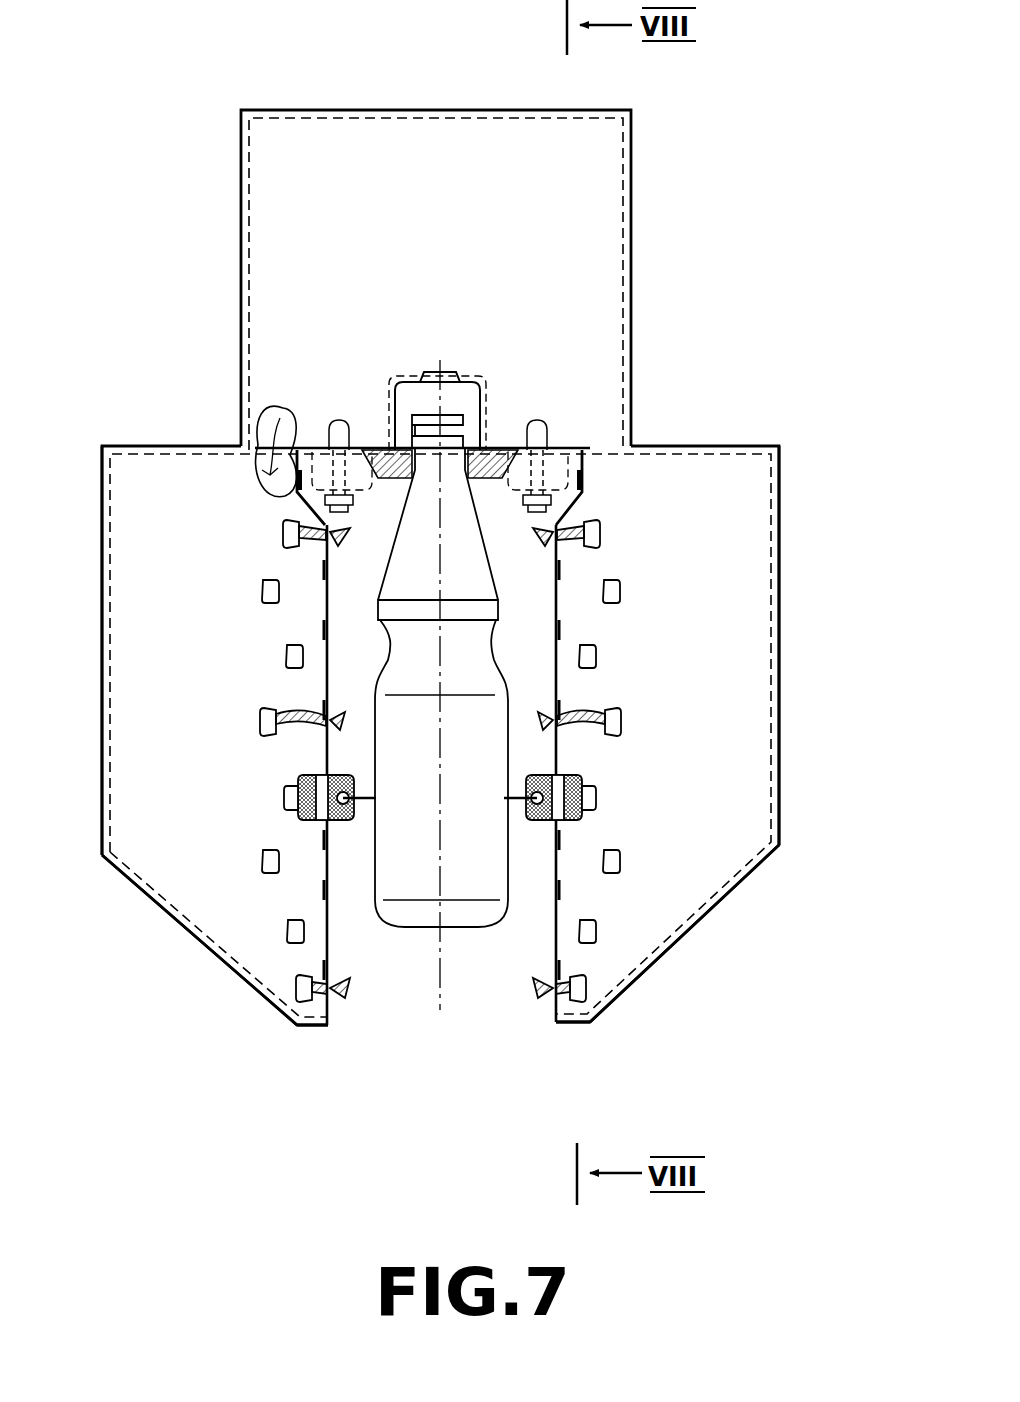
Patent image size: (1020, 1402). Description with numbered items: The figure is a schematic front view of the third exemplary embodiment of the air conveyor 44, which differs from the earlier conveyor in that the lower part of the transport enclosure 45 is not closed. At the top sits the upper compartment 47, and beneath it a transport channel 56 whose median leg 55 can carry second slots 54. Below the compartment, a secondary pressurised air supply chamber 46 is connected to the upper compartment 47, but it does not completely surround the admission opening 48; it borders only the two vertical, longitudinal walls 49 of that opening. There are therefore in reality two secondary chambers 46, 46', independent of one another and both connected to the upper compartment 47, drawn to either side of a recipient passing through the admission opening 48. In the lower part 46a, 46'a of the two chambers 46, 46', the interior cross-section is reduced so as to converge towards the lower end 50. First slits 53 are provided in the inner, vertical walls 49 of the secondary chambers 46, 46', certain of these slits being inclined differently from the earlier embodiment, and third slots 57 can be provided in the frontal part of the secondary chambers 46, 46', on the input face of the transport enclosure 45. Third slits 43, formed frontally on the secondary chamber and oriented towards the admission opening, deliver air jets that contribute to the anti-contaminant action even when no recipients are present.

The third slits 43 is at (621, 859).
The air conveyor 44 is at (680, 256).
The transport enclosure 45 is at (346, 108).
The secondary pressurised air supply chamber 46 is at (801, 645).
The secondary pressurised air supply chamber 46' is at (80, 650).
The lower part 46a is at (666, 922).
The lower part 46'a is at (199, 940).
The upper compartment 47 is at (460, 226).
The admission opening 48 is at (492, 1036).
The vertical longitudinal walls 49 is at (326, 868).
The lower end 50 is at (320, 1030).
The first slits 53 is at (322, 622).
The second slots 54 is at (441, 370).
The median leg 55 is at (470, 380).
The transport channel 56 is at (372, 396).
The third slots 57 is at (624, 716).